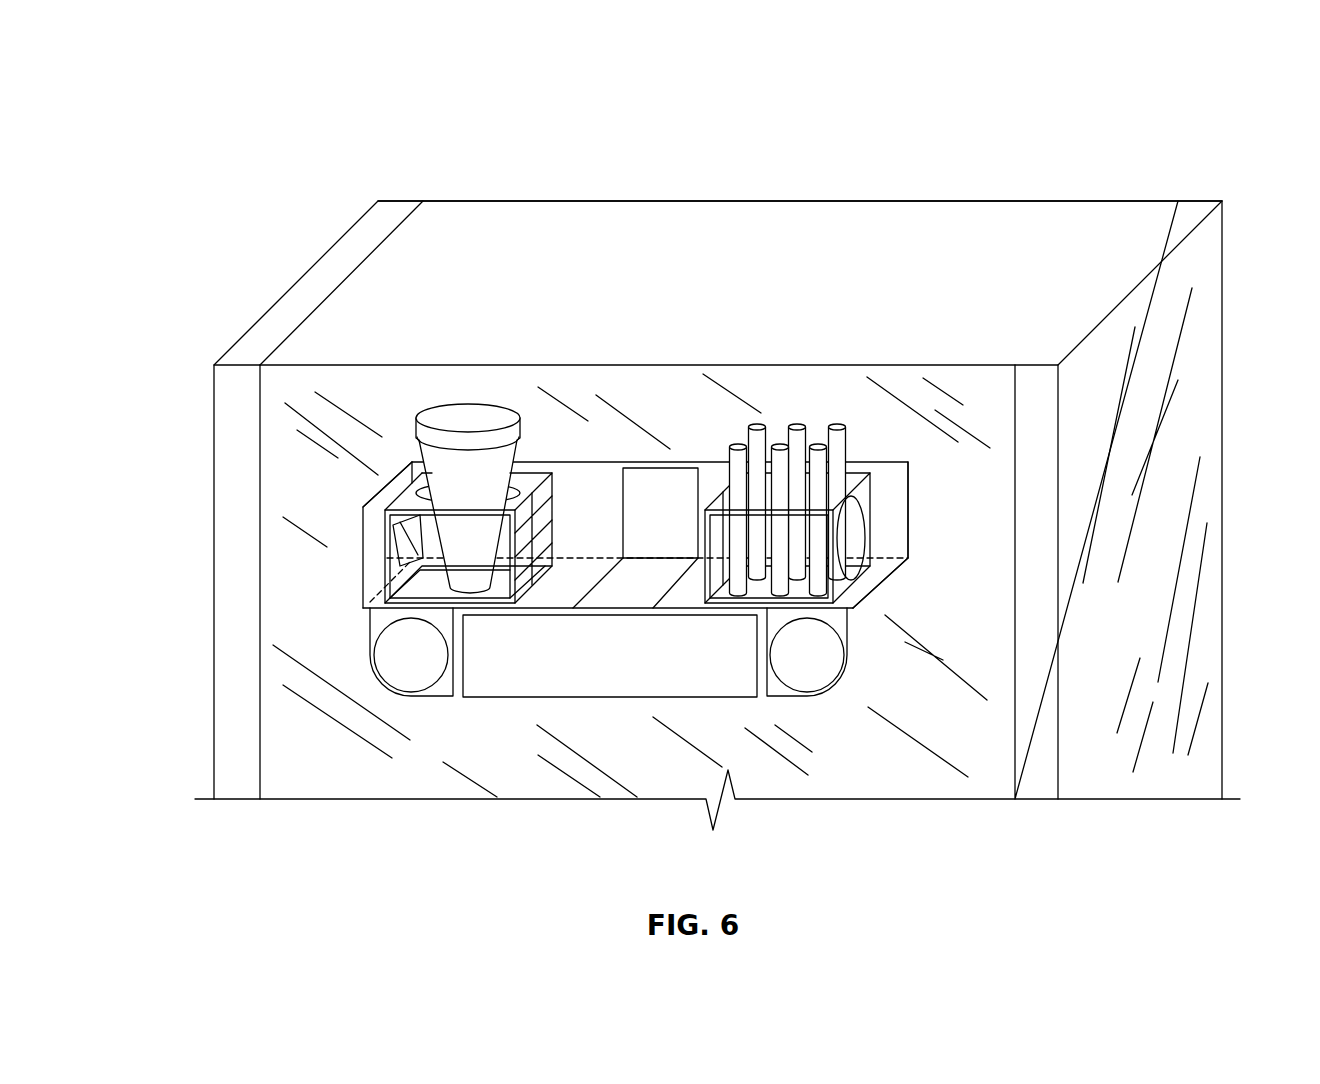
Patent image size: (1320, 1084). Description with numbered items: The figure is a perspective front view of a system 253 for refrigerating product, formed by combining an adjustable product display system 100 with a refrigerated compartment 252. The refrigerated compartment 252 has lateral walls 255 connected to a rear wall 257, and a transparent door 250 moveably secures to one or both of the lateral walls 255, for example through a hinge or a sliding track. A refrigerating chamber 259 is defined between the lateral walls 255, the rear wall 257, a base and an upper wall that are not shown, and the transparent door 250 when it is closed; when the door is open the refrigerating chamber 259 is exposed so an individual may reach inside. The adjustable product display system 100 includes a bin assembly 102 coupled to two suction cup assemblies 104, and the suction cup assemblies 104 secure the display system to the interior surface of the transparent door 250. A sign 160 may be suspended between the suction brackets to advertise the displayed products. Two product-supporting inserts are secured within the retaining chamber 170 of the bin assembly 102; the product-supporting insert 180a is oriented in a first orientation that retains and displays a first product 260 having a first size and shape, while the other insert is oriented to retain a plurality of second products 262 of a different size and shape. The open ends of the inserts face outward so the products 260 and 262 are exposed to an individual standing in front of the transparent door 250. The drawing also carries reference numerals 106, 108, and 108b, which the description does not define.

The adjustable product display system 100 is at (668, 708).
The bin assembly 102 is at (897, 513).
The suction cup assemblies 104 is at (417, 678).
The container holder cage 106 is at (360, 573).
The sample tube rack 108 is at (897, 540).
The rack back frame 108b is at (884, 473).
The sign 160 is at (603, 678).
The retaining chamber 170 is at (689, 365).
The product-supporting insert 180a is at (532, 490).
The transparent door 250 is at (596, 480).
The refrigerated compartment 252 is at (297, 493).
The system for refrigerating product 253 is at (243, 137).
The lateral walls 255 is at (292, 290).
The rear wall 257 is at (540, 209).
The refrigerating chamber 259 is at (396, 260).
The first product 260 is at (422, 463).
The second products 262 is at (835, 425).